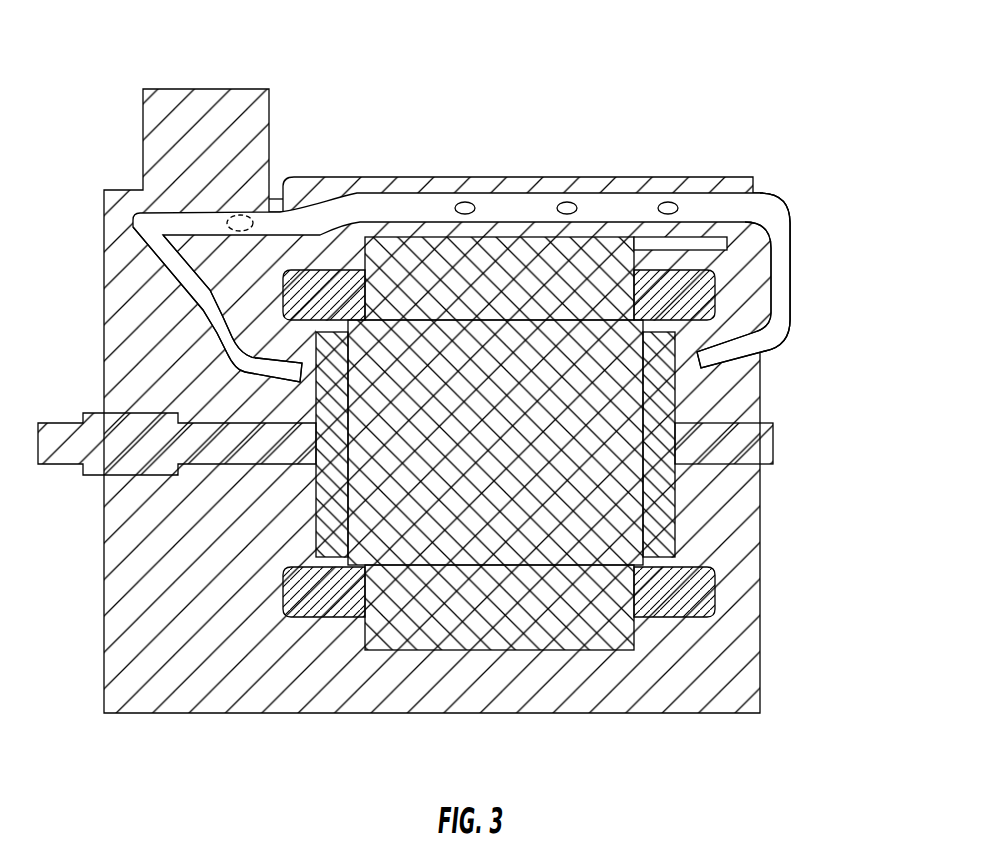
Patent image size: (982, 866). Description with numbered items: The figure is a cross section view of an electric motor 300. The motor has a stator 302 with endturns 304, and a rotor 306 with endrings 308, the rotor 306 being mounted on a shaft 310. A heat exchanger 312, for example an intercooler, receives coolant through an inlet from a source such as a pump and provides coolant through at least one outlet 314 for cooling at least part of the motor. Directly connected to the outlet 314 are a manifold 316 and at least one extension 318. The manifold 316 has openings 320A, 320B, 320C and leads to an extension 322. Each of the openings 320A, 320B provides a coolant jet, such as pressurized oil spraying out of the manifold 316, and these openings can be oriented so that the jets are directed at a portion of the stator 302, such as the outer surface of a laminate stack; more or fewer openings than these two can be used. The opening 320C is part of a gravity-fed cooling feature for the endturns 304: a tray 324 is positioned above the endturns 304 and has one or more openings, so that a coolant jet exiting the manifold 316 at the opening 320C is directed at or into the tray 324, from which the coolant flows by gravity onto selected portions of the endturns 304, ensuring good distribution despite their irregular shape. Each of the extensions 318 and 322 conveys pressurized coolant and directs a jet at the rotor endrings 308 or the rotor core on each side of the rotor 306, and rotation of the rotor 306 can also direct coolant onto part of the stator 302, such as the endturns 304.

The electric motor 300 is at (442, 422).
The stator 302 is at (437, 650).
The endturns 304 is at (332, 618).
The rotor 306 is at (557, 567).
The endrings 308 is at (677, 398).
The shaft 310 is at (773, 423).
The heat exchanger 312 is at (187, 89).
The outlet 314 is at (253, 222).
The manifold 316 is at (330, 196).
The extension 318 is at (163, 287).
The opening 320A is at (465, 201).
The opening 320B is at (565, 201).
The opening 320C is at (667, 201).
The extension 322 is at (777, 207).
The tray 324 is at (677, 250).